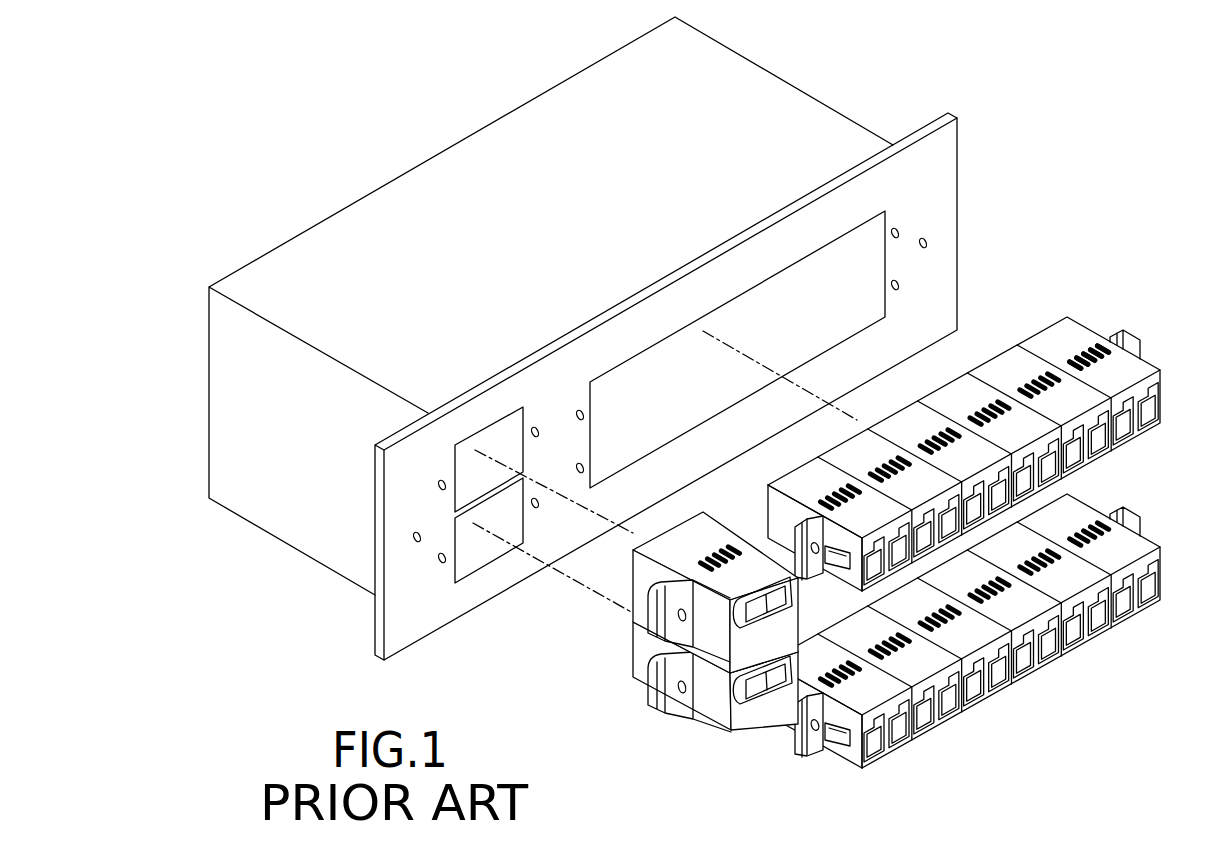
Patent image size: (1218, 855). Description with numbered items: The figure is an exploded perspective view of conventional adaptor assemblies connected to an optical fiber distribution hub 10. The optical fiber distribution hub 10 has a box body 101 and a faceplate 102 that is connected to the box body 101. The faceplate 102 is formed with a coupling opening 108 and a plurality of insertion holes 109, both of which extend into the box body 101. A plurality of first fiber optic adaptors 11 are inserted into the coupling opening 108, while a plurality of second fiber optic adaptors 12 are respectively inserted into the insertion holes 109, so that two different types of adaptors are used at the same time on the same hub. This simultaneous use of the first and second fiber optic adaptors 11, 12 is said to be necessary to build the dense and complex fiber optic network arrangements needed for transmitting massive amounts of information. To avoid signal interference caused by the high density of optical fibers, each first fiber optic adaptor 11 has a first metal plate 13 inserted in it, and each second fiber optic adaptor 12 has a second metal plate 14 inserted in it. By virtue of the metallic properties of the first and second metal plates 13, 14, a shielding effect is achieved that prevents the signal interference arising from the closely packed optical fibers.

The optical fiber distribution hub 10 is at (657, 354).
The box body 101 is at (493, 145).
The faceplate 102 is at (715, 393).
The coupling opening 108 is at (745, 312).
The insertion holes 109 is at (497, 434).
The first fiber optic adaptors 11 is at (992, 514).
The second fiber optic adaptors 12 is at (660, 646).
The first metal plate 13 is at (1093, 343).
The second metal plate 14 is at (705, 569).